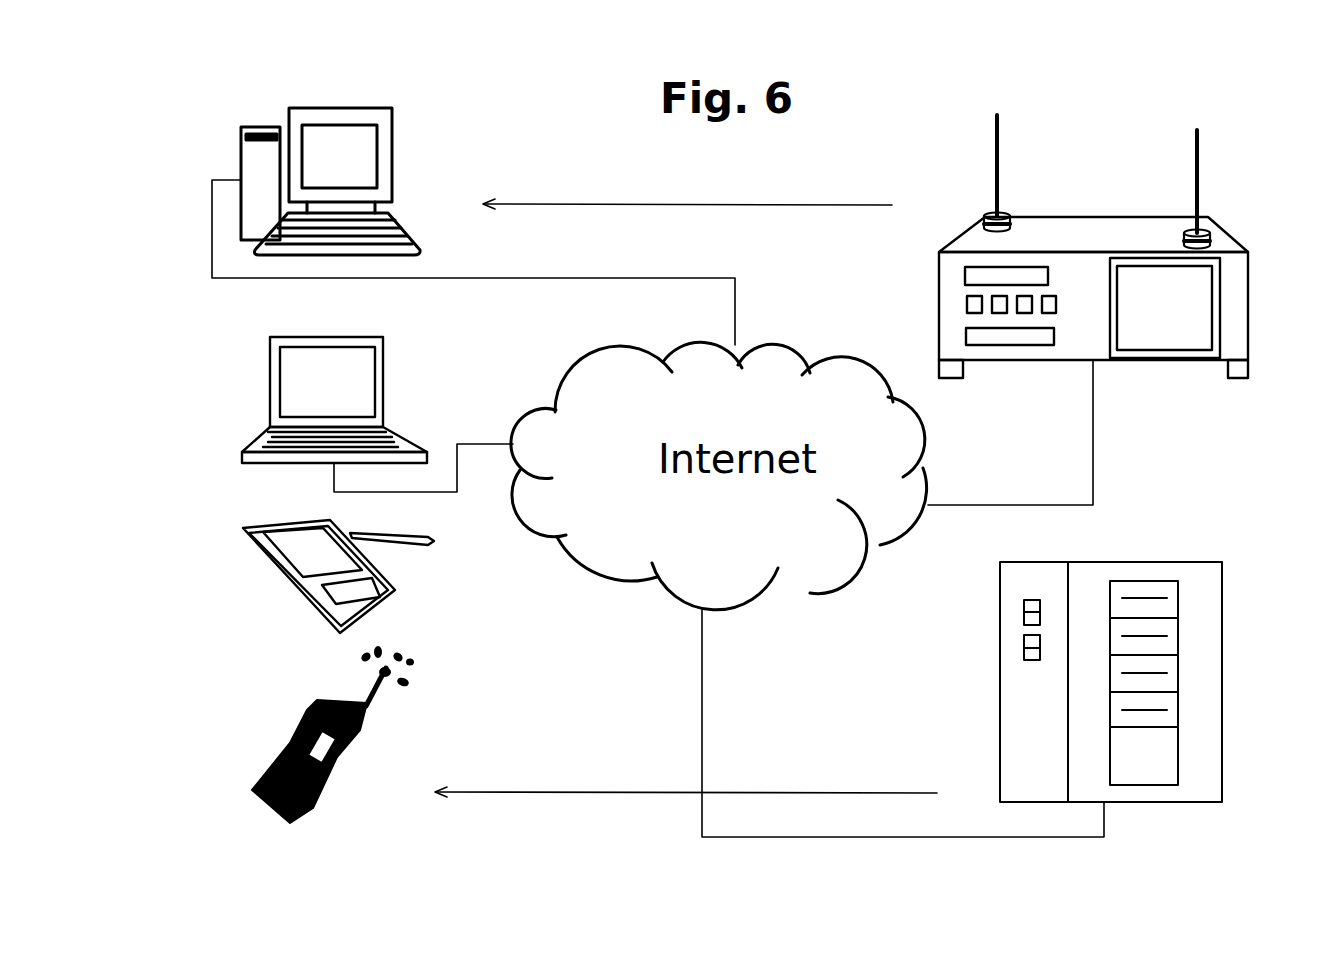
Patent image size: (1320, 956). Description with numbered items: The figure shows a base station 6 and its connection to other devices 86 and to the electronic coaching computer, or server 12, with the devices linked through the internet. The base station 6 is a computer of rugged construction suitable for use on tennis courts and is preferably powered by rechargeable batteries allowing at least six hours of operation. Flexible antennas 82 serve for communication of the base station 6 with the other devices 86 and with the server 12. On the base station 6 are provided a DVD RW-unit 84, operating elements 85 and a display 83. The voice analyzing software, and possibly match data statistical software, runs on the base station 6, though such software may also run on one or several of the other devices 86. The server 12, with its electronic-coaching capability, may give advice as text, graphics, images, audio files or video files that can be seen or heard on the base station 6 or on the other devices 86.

The base station 6 is at (975, 245).
The flexible antennas 82 is at (1177, 235).
The display 83 is at (1158, 330).
The DVD RW-unit 84 is at (965, 279).
The operating elements 85 is at (1013, 312).
The other devices 86 is at (277, 760).
The electronic coaching computer 12 is at (1008, 712).